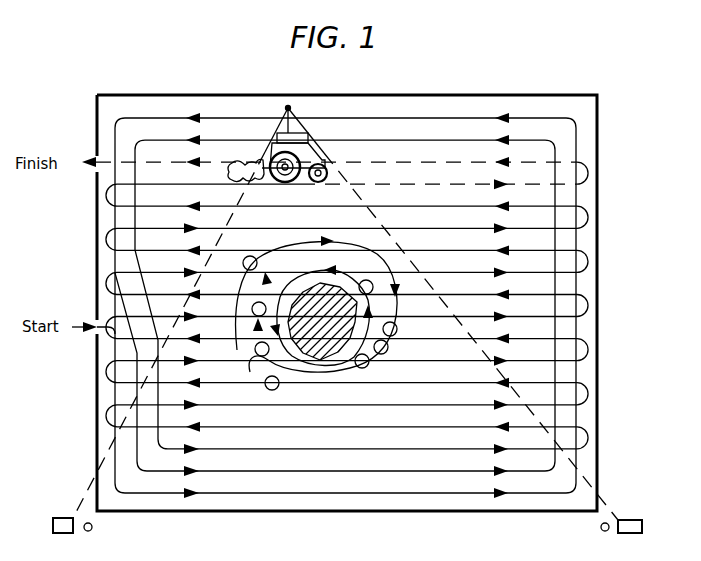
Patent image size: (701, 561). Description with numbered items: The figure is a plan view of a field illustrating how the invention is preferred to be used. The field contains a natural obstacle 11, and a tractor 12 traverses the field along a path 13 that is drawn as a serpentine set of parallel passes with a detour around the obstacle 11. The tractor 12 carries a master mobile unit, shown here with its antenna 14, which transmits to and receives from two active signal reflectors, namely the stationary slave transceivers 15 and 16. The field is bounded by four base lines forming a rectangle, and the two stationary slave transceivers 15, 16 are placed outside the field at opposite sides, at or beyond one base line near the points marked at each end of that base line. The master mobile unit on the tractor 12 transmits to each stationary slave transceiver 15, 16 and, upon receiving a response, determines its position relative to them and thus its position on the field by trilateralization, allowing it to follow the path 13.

The natural obstacle 11 is at (332, 352).
The tractor 12 is at (288, 185).
The path 13 is at (429, 118).
The antenna / reflector on vehicle 14 is at (304, 131).
The stationary slave transceiver 15 is at (639, 520).
The stationary slave transceiver 16 is at (57, 520).